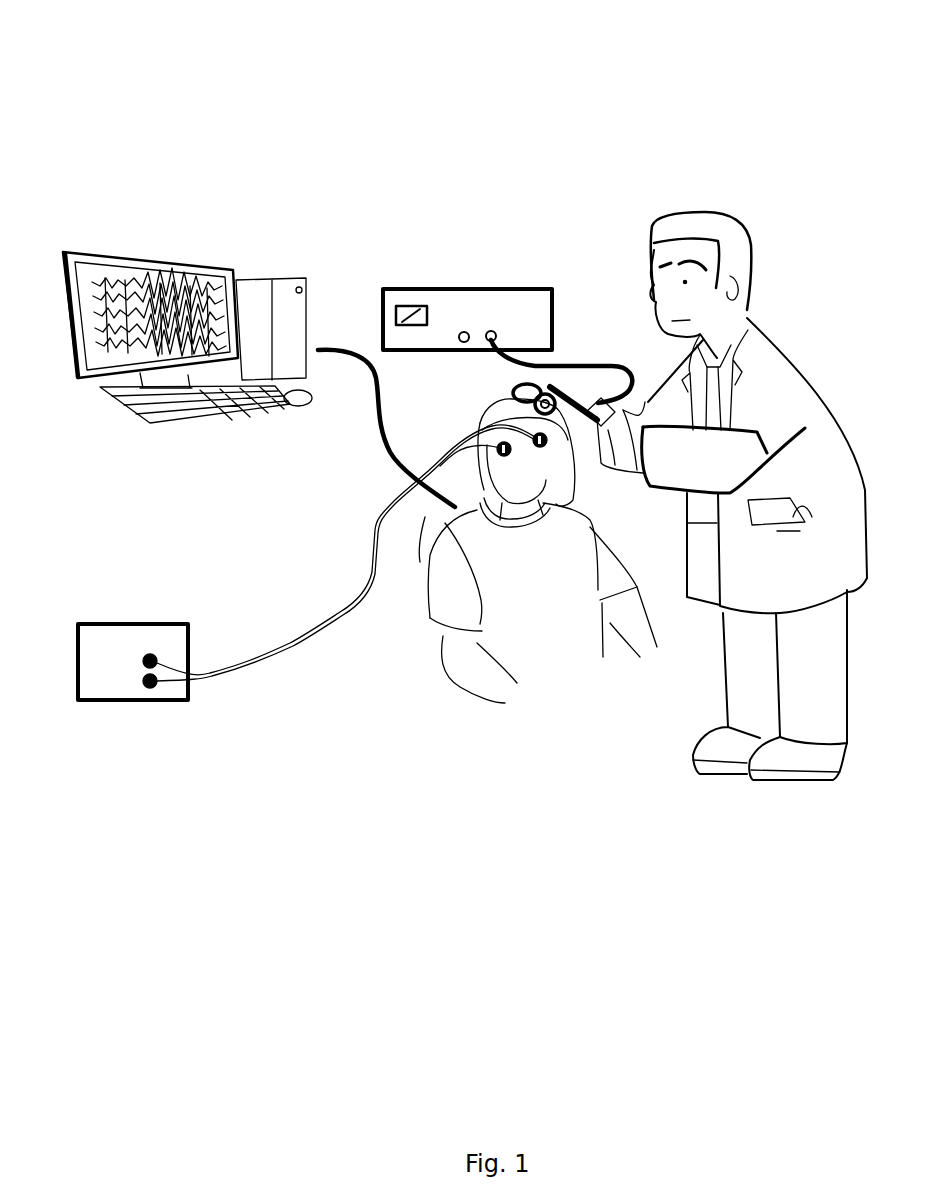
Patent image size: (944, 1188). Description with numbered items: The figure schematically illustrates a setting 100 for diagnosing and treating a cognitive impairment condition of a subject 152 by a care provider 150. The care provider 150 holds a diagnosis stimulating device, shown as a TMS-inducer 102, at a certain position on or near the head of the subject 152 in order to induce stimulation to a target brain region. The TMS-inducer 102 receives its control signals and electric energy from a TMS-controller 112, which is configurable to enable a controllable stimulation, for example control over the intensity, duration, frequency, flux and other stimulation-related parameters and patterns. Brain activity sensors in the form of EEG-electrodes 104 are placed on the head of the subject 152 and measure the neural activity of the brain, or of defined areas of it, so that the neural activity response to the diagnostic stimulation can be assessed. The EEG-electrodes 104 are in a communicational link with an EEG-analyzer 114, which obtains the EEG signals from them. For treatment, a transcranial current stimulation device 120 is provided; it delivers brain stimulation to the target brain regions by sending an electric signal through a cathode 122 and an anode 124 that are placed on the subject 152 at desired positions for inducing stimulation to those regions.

The setting 100 is at (321, 66).
The TMS-inducer 102 is at (593, 383).
The EEG-electrodes 104 is at (458, 425).
The TMS-controller 112 is at (455, 280).
The EEG-analyzer 114 is at (112, 240).
The transcranial current stimulation (tCS) device 120 is at (130, 620).
The cathode 122 is at (500, 465).
The anode 124 is at (490, 423).
The care provider 150 is at (767, 287).
The subject 152 is at (437, 697).